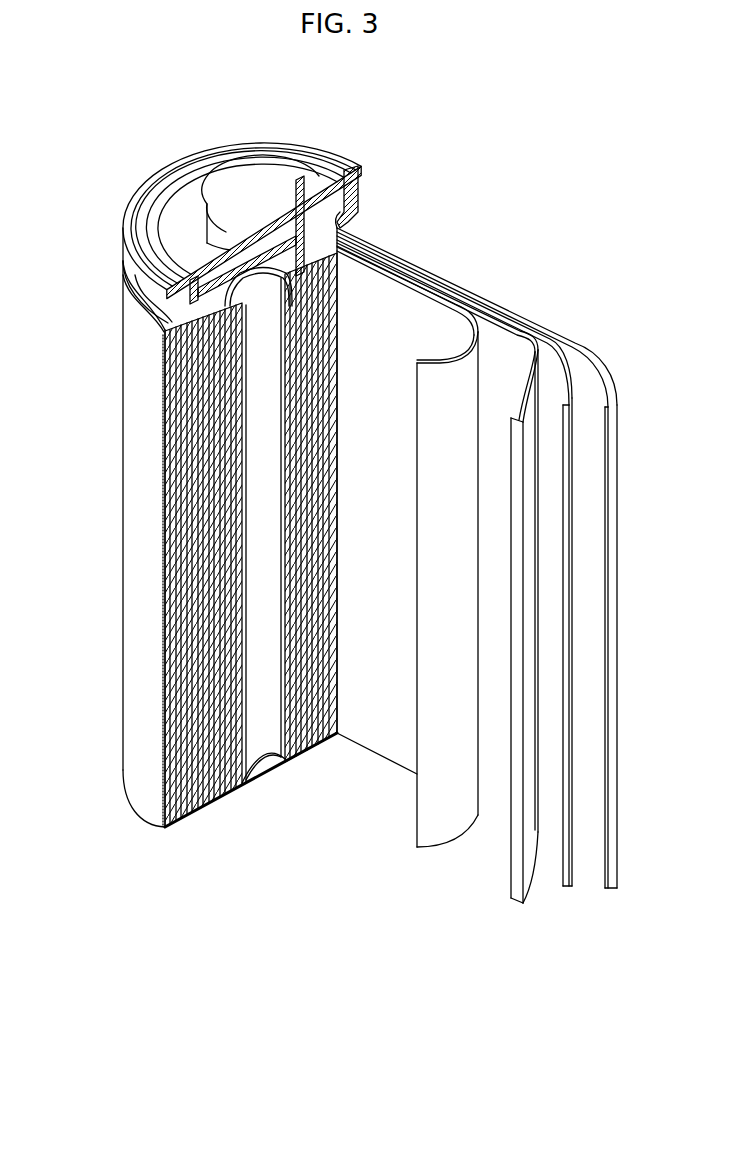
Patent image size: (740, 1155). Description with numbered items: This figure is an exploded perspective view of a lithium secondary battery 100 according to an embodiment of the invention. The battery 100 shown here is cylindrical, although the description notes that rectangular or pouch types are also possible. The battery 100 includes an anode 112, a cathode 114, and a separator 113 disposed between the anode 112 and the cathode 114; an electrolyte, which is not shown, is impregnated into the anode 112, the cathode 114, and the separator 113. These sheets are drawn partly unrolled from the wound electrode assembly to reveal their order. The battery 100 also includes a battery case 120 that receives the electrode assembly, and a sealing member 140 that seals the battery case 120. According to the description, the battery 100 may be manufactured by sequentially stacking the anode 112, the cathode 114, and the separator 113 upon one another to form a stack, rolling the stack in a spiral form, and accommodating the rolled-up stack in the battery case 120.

The lithium secondary battery 100 is at (323, 88).
The anode 112 is at (596, 375).
The separator 113 is at (448, 365).
The cathode 114 is at (528, 372).
The battery case 120 is at (125, 528).
The sealing member 140 is at (235, 188).